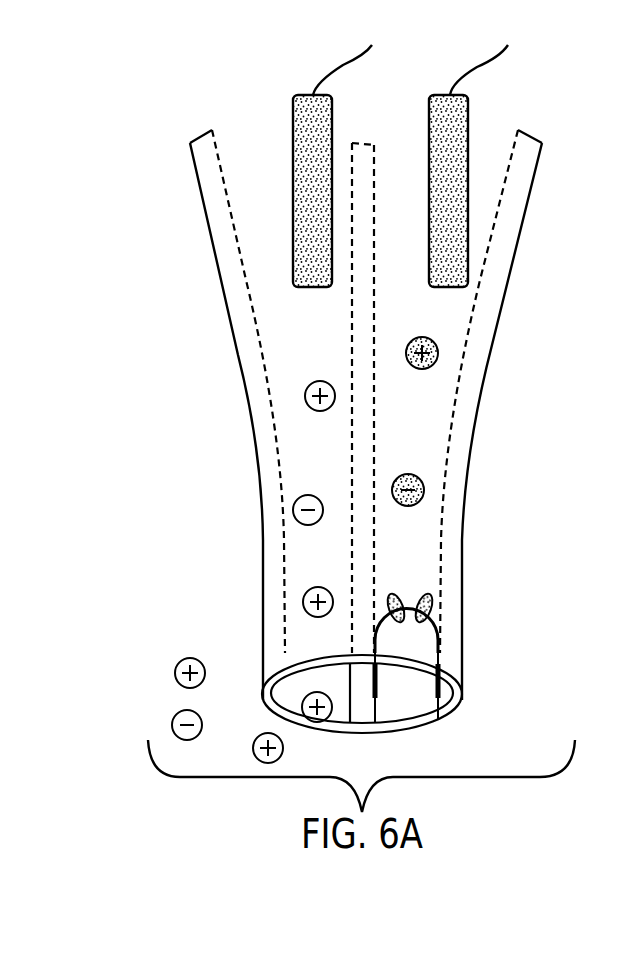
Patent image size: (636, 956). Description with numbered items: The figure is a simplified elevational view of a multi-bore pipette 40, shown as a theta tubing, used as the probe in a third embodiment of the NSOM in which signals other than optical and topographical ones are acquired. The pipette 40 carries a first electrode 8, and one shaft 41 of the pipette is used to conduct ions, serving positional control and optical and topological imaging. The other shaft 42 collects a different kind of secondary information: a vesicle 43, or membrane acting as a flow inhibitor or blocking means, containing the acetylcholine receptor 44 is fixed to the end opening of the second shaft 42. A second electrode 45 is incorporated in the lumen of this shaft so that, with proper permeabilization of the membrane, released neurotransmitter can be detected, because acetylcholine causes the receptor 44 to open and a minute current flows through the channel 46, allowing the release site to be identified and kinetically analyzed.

The first electrode 8 is at (292, 182).
The multi-bore pipette 40 is at (560, 200).
The first shaft 41 is at (240, 373).
The second shaft 42 is at (488, 355).
The vesicle 43 is at (438, 653).
The acetylcholine receptor 44 is at (428, 598).
The second electrode 45 is at (470, 127).
The channel 46 is at (409, 594).